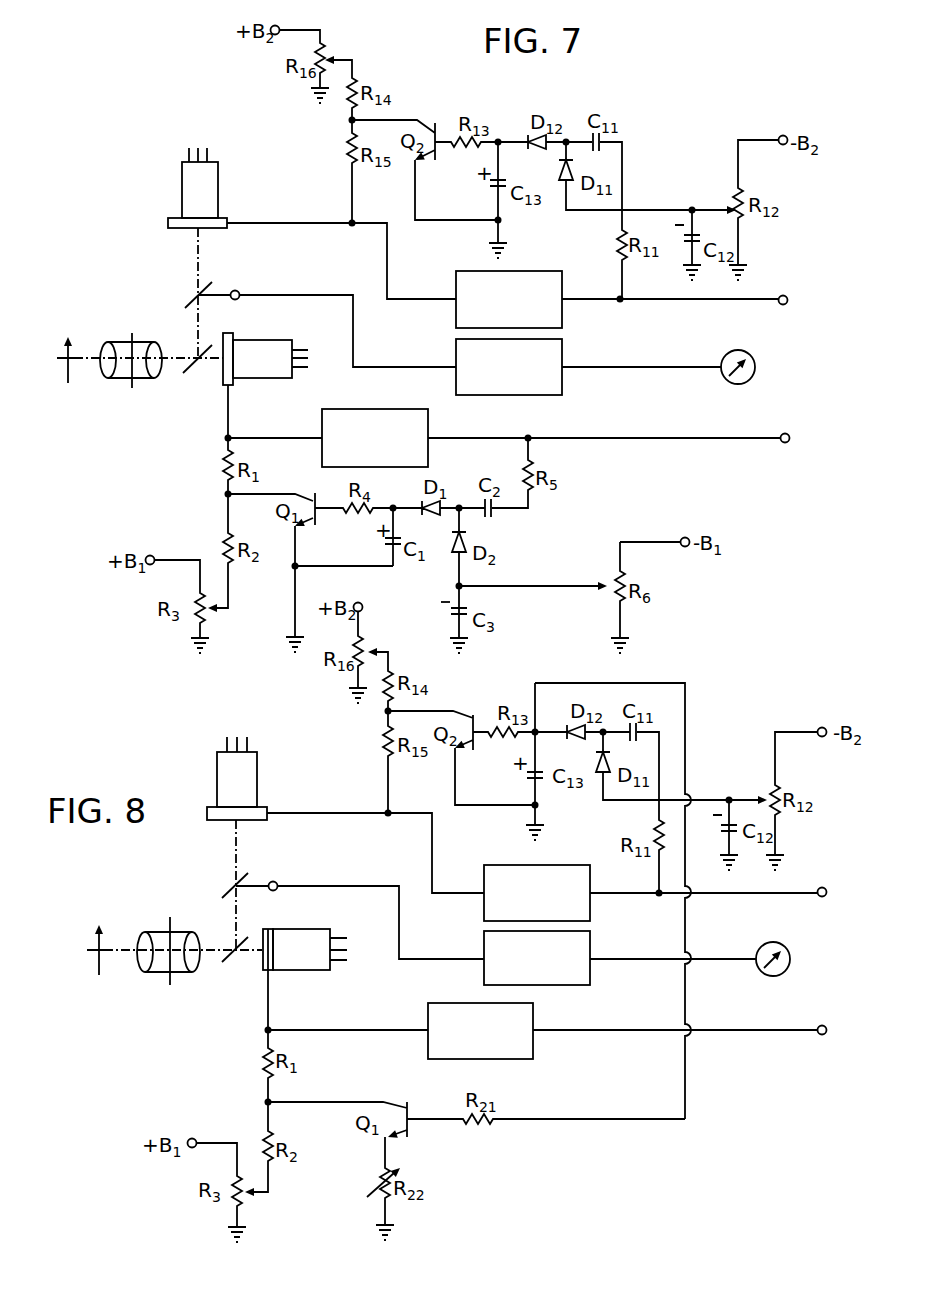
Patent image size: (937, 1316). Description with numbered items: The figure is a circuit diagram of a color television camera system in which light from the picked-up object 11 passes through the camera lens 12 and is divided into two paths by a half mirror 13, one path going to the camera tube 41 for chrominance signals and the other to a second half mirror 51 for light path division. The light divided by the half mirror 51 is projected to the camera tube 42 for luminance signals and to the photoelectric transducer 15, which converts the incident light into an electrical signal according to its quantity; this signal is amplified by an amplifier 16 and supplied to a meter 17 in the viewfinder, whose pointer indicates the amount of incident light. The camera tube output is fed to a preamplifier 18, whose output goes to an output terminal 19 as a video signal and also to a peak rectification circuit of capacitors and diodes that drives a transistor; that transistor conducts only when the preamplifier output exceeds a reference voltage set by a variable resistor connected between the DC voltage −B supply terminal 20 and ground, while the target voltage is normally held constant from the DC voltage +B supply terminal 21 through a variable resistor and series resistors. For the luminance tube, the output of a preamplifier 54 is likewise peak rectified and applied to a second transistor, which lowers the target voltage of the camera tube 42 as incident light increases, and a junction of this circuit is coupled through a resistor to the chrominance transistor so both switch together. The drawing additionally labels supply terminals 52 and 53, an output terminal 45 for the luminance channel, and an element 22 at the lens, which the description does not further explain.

In FIG. 7, the camera object 11 is at (66, 333).
In FIG. 8, the camera object 11 is at (95, 933).
In FIG. 7, the camera lens 12 is at (141, 340).
In FIG. 8, the camera lens 12 is at (157, 935).
In FIG. 7, the half mirror 13 is at (198, 371).
In FIG. 8, the half mirror 13 is at (236, 963).
In FIG. 7, the photoelectric transducer 15 is at (238, 290).
In FIG. 8, the photoelectric transducer 15 is at (277, 880).
In FIG. 7, the amplifier 16 is at (565, 345).
In FIG. 8, the amplifier 16 is at (590, 936).
In FIG. 7, the meter 17 is at (752, 360).
In FIG. 8, the meter 17 is at (787, 950).
In FIG. 7, the preamplifier 18 is at (320, 422).
In FIG. 8, the preamplifier 18 is at (437, 992).
In FIG. 7, the output terminal 19 is at (787, 433).
In FIG. 8, the output terminal 19 is at (825, 1025).
In FIG. 7, the DC voltage −B supply terminal 20 is at (687, 537).
In FIG. 7, the DC voltage +B supply terminal 21 is at (152, 554).
In FIG. 7, the aperture / lens axis 22 is at (132, 388).
In FIG. 8, the aperture / lens axis 22 is at (170, 985).
In FIG. 7, the camera tube for chrominance signals 41 is at (278, 340).
In FIG. 8, the camera tube for chrominance signals 41 is at (305, 972).
In FIG. 7, the camera tube for luminance signals 42 is at (218, 180).
In FIG. 8, the camera tube for luminance signals 42 is at (257, 780).
In FIG. 7, the output terminal 45 is at (784, 295).
In FIG. 8, the output terminal 45 is at (824, 886).
In FIG. 7, the half mirror 51 is at (188, 300).
In FIG. 8, the half mirror 51 is at (228, 893).
In FIG. 7, the positive bias terminal 52 is at (279, 26).
In FIG. 8, the positive bias terminal 52 is at (363, 604).
In FIG. 7, the negative bias terminal 53 is at (778, 136).
In FIG. 8, the negative bias terminal 53 is at (820, 726).
In FIG. 7, the preamplifier 54 is at (531, 271).
In FIG. 8, the preamplifier 54 is at (571, 865).